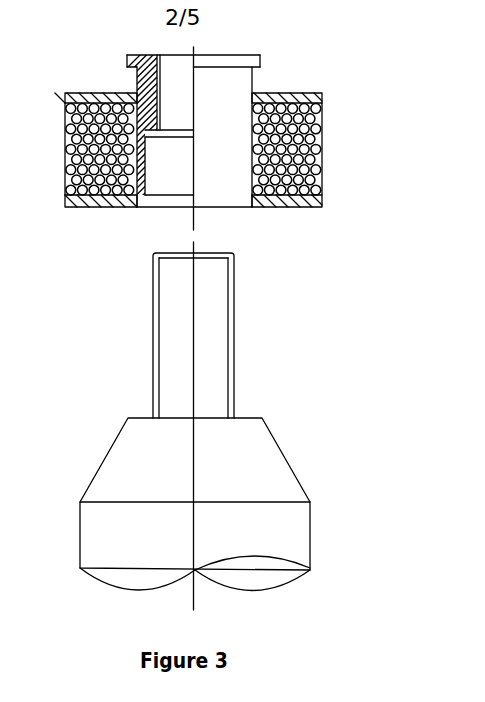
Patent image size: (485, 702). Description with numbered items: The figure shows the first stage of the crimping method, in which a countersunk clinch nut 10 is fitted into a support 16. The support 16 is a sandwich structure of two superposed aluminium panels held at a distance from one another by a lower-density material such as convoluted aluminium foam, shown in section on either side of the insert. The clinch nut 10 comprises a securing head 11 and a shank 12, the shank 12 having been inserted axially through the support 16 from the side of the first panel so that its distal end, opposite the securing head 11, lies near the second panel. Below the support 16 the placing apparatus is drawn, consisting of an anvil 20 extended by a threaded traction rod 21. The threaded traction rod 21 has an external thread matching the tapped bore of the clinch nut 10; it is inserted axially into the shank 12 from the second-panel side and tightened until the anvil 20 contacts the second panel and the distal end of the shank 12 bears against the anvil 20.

The countersunk clinch nut 10 is at (138, 80).
The securing head 11 is at (217, 60).
The shank 12 is at (224, 99).
The support 16 is at (287, 93).
The anvil 20 is at (250, 418).
The threaded traction rod 21 is at (218, 353).